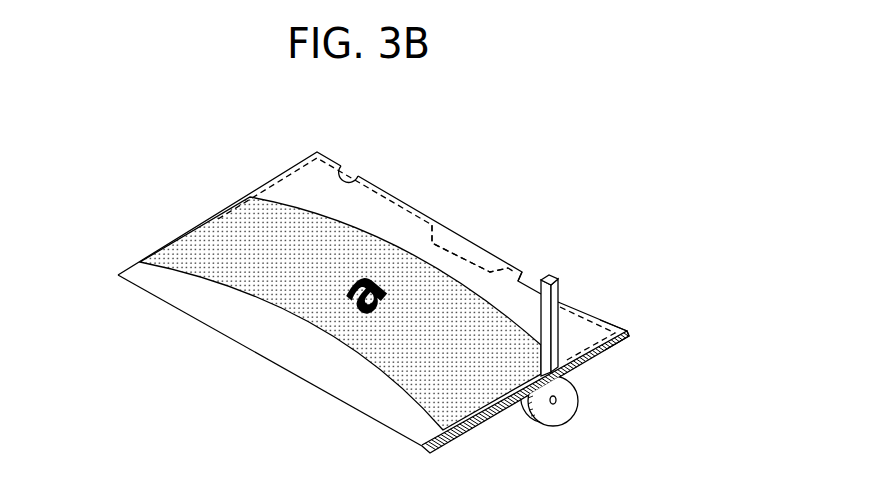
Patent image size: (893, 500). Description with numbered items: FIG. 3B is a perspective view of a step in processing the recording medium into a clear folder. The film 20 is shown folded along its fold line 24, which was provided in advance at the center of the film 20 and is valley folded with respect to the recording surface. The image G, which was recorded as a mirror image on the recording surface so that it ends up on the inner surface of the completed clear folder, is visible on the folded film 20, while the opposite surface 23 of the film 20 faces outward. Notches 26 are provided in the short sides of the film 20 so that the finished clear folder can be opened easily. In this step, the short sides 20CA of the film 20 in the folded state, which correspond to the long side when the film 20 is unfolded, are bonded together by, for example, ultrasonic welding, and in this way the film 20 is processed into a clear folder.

The film 20 is at (432, 204).
The notches 26 is at (357, 177).
The short sides of the film in the folded state 20CA is at (614, 323).
The opposite surface 23 is at (385, 408).
The fold line 24 is at (257, 357).
The image G is at (215, 290).